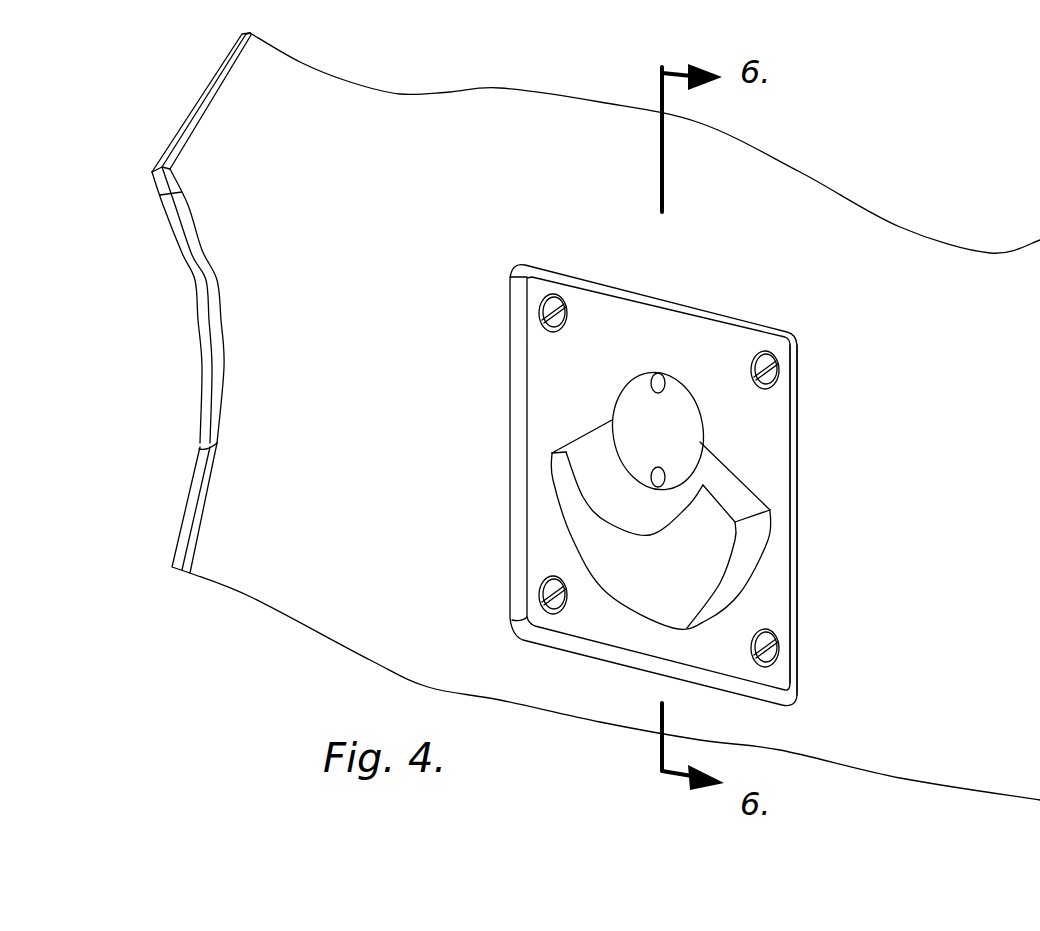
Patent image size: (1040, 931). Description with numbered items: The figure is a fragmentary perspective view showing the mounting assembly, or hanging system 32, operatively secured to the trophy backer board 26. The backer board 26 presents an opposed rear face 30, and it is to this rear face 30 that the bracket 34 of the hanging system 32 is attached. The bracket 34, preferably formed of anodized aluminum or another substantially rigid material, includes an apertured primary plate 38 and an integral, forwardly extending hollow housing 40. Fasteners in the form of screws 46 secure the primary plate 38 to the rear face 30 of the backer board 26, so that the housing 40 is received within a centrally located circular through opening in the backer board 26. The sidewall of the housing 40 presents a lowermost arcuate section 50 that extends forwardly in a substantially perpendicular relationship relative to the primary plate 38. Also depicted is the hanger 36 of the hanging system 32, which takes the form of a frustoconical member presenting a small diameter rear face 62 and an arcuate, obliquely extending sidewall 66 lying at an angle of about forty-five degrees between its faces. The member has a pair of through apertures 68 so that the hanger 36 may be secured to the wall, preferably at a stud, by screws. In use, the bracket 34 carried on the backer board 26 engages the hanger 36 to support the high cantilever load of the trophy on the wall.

The backer board 26 is at (202, 472).
The rear face 30 is at (227, 275).
The hanging system 32 is at (688, 485).
The bracket 34 is at (717, 485).
The hanger 36 is at (742, 447).
The primary plate 38 is at (782, 520).
The hollow housing 40 is at (687, 577).
The screws 46 is at (548, 312).
The lowermost arcuate section 50 is at (760, 572).
The rear face 62 is at (668, 412).
The sidewall 66 is at (654, 526).
The through apertures 68 is at (658, 377).